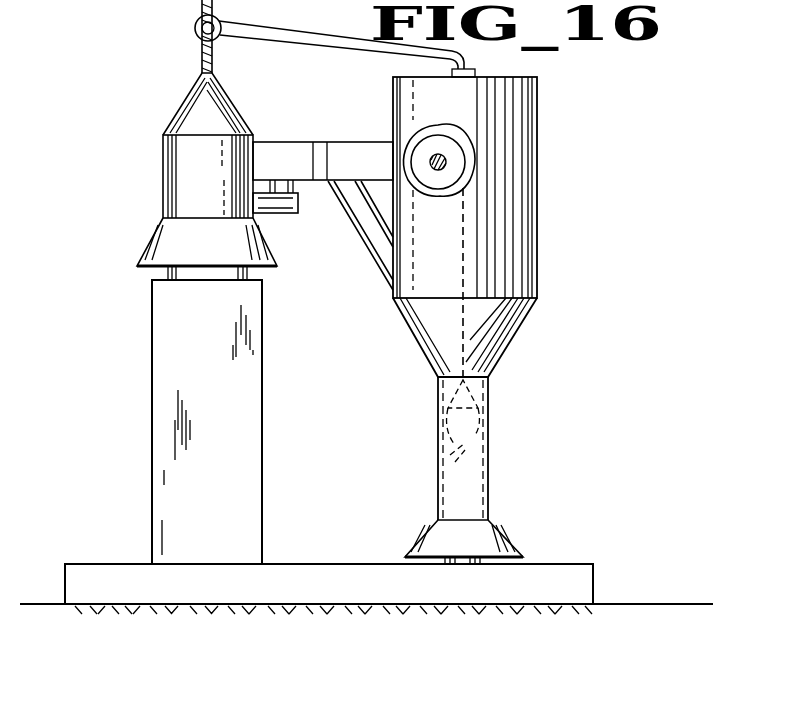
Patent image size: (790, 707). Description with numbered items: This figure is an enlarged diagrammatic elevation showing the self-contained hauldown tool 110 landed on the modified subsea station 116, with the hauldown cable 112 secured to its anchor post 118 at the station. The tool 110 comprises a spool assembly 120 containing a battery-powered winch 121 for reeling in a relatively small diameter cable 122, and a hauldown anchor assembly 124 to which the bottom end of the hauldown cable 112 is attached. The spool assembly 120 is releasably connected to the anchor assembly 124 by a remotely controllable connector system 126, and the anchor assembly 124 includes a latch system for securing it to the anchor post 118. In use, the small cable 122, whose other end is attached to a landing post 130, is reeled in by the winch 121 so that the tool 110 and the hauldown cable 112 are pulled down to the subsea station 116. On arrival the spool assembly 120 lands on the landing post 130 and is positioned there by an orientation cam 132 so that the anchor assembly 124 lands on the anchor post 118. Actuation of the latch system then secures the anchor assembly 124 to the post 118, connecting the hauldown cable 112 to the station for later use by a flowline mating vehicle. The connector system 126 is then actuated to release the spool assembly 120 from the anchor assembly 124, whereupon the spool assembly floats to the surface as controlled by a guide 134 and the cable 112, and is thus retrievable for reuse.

The self-contained hauldown tool 110 is at (507, 227).
The hauldown cable 112 is at (203, 53).
The subsea station 116 is at (118, 533).
The anchor post 118 is at (170, 273).
The spool assembly 120 is at (540, 190).
The battery-powered winch 121 is at (428, 147).
The small diameter cable 122 is at (466, 265).
The hauldown anchor assembly 124 is at (163, 166).
The remotely controllable connector system 126 is at (320, 143).
The landing post 130 is at (490, 460).
The orientation cam 132 is at (434, 445).
The guide 134 is at (325, 50).